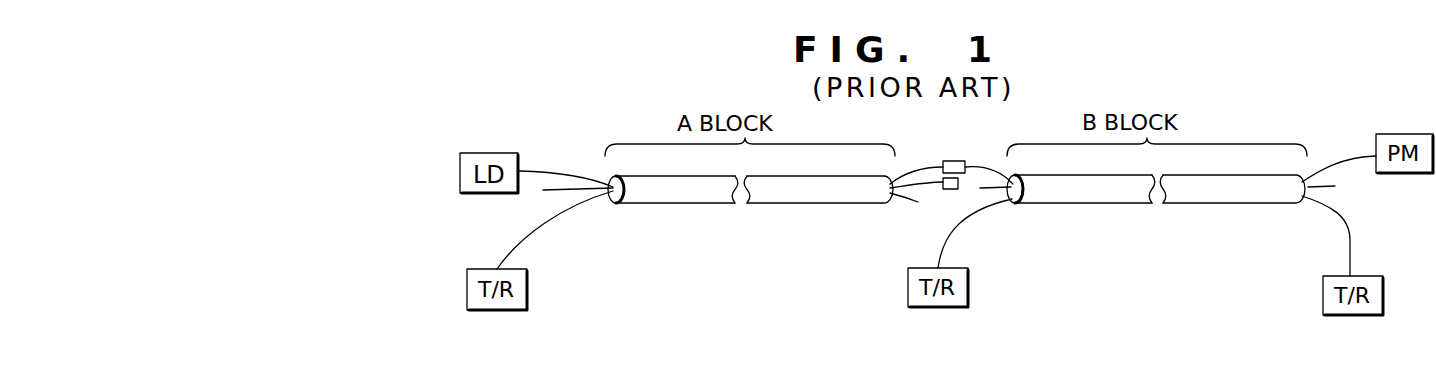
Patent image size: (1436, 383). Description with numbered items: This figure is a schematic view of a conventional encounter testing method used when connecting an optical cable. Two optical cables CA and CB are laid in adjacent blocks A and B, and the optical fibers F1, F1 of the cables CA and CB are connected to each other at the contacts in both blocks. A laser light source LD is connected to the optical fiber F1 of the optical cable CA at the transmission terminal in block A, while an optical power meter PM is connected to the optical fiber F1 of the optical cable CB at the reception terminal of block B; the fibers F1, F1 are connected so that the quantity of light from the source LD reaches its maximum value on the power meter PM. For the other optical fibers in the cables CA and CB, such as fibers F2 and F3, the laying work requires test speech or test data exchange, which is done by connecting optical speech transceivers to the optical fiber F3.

The optical cable CA is at (697, 200).
The optical cable CB is at (1108, 200).
The optical fiber F1 is at (549, 168).
The optical fiber F2 is at (549, 194).
The optical fiber F3 is at (573, 210).